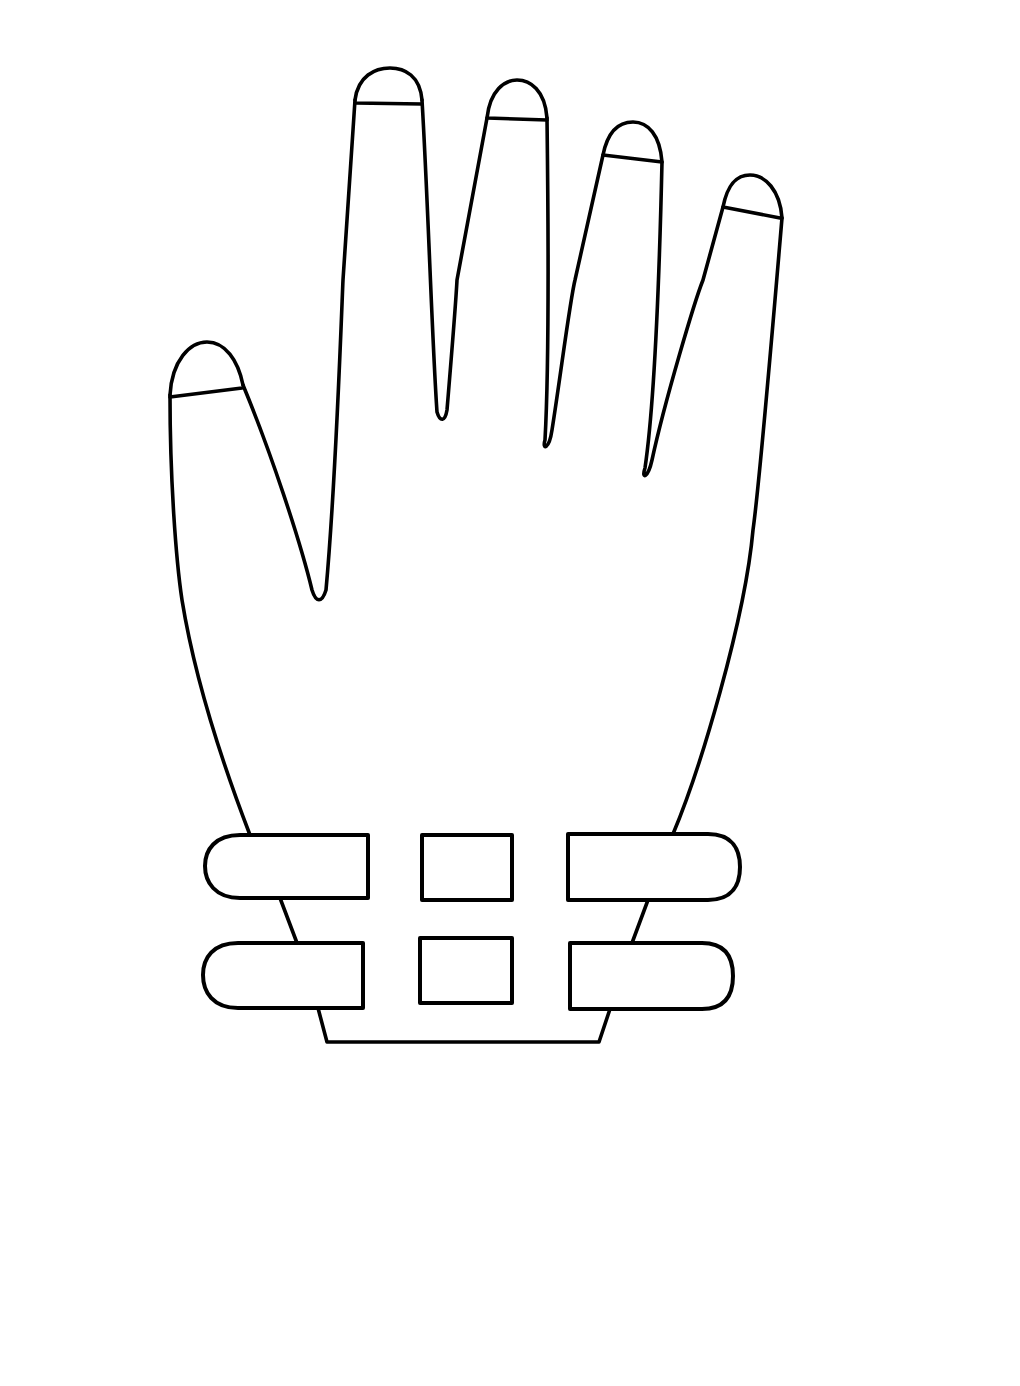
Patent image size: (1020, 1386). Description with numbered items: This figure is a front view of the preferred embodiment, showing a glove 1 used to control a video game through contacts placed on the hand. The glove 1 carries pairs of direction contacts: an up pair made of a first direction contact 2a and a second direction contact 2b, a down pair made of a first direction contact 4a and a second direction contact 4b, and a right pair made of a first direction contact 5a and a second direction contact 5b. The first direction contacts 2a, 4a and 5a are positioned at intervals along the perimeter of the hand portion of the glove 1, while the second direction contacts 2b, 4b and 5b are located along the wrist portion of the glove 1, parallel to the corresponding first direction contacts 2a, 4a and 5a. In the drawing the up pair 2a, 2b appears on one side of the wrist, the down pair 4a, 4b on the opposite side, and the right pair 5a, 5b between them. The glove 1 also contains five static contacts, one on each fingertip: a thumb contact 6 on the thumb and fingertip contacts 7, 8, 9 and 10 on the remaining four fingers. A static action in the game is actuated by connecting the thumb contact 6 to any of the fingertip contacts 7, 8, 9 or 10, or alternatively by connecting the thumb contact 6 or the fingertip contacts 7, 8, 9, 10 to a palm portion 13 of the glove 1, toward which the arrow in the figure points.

The glove 1 is at (170, 563).
The palm portion 13 is at (532, 660).
The thumb contact 6 is at (193, 357).
The fingertip contact 7 is at (390, 77).
The fingertip contact 8 is at (517, 92).
The fingertip contact 9 is at (645, 133).
The fingertip contact 10 is at (768, 185).
The first direction contact of up pair 2a is at (203, 865).
The second direction contact of up pair 2b is at (198, 970).
The first direction contact of down pair 4a is at (742, 875).
The second direction contact of down pair 4b is at (733, 980).
The first direction contact of right pair 5a is at (422, 832).
The second direction contact of right pair 5b is at (470, 1003).